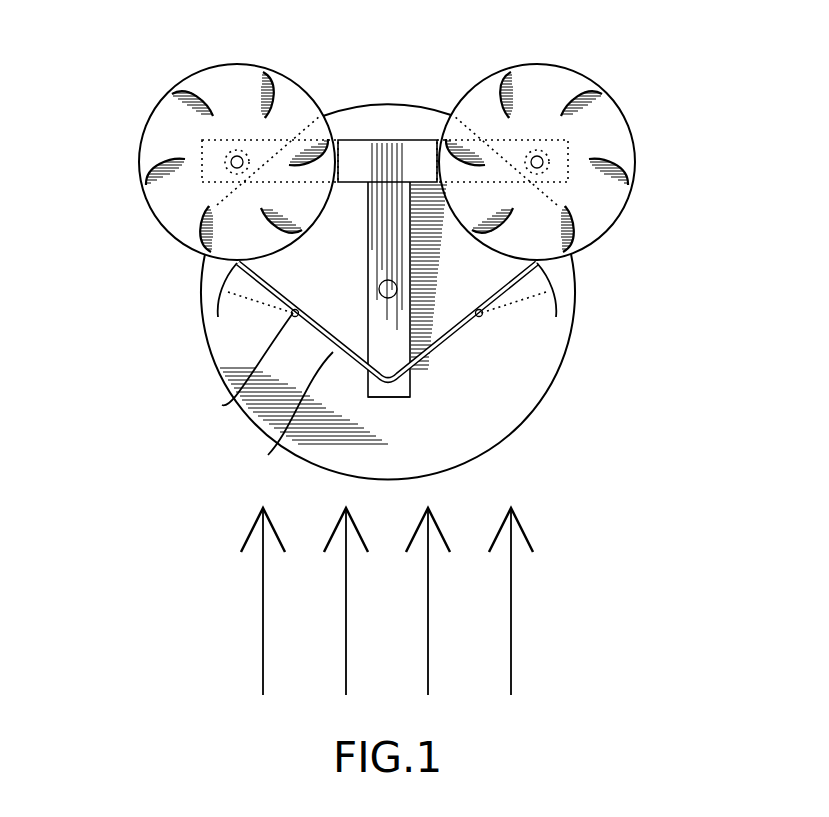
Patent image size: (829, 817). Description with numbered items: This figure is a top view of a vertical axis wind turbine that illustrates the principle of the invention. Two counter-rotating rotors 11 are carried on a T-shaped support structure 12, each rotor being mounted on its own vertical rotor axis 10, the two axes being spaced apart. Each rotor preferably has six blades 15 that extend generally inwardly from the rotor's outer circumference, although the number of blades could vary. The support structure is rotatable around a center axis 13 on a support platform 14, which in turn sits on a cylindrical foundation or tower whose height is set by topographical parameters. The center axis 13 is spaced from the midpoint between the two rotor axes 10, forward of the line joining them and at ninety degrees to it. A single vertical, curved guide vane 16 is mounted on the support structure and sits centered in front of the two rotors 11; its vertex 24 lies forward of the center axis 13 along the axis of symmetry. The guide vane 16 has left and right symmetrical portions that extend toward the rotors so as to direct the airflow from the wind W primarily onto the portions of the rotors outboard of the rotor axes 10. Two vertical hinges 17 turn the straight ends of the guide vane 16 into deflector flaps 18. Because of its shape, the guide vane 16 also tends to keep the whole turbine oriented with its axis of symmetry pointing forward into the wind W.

The rotor axis 10 is at (238, 156).
The rotor 11 is at (141, 143).
The T-shaped support structure 12 is at (365, 158).
The center axis 13 is at (395, 294).
The support platform 14 is at (540, 345).
The rotor blades 15 is at (205, 220).
The guide vane 16 is at (268, 455).
The vertical hinges 17 is at (260, 345).
The deflector flaps 18 is at (238, 302).
The vertex 24 is at (390, 392).
The wind direction W is at (262, 630).